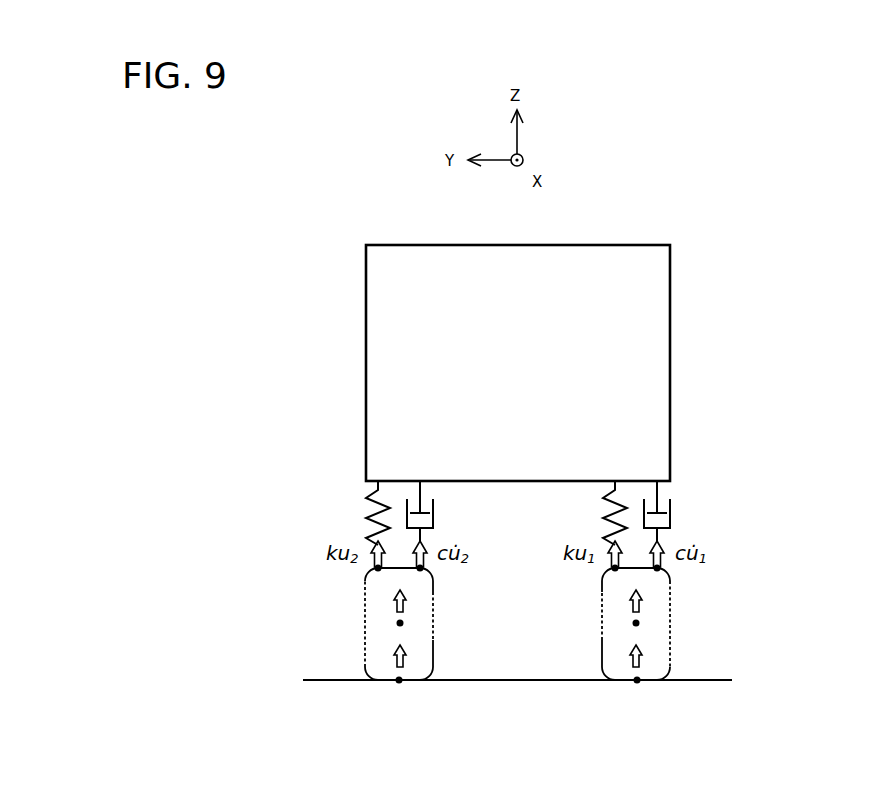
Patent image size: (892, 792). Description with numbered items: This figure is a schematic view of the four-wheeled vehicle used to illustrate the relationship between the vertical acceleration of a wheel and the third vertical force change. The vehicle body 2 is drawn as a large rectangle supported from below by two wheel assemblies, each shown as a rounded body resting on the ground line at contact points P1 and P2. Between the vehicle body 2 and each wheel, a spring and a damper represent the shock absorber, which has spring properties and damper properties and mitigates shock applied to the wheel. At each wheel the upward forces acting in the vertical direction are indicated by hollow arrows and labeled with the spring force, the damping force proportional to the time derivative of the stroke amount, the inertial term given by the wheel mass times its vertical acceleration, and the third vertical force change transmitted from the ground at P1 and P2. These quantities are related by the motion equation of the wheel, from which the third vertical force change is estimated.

The vehicle body 2 is at (670, 343).
The first ground contact point P1 is at (637, 683).
The second ground contact point P2 is at (399, 683).